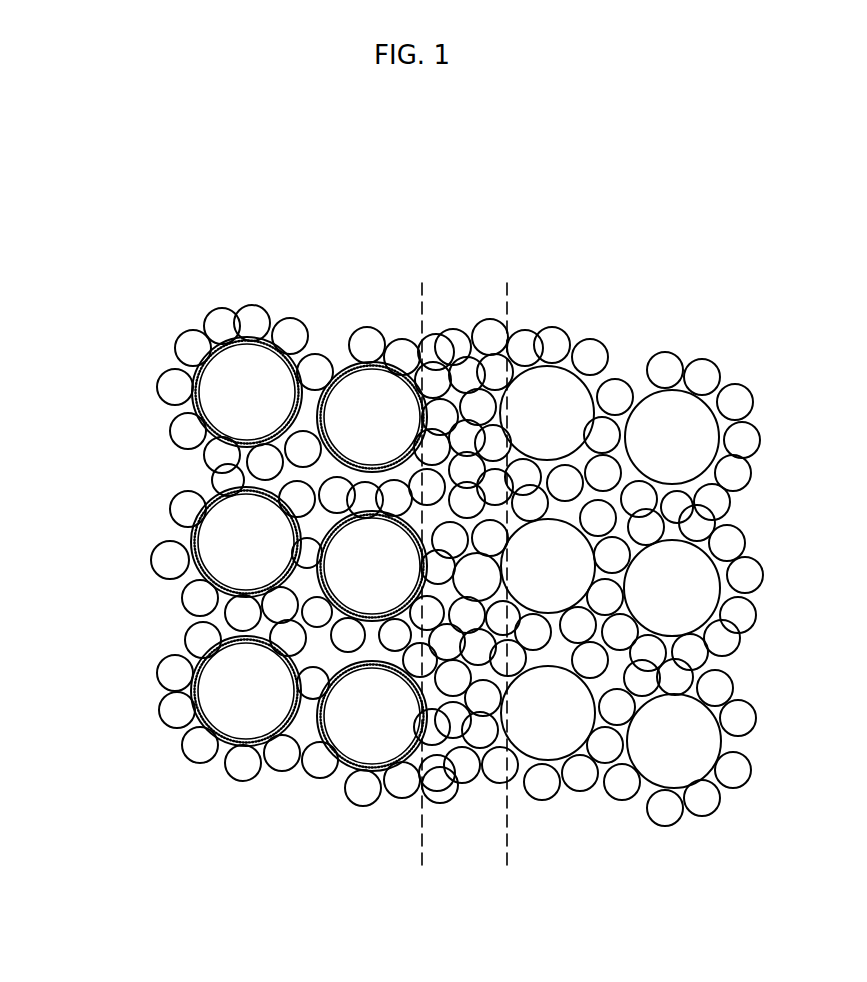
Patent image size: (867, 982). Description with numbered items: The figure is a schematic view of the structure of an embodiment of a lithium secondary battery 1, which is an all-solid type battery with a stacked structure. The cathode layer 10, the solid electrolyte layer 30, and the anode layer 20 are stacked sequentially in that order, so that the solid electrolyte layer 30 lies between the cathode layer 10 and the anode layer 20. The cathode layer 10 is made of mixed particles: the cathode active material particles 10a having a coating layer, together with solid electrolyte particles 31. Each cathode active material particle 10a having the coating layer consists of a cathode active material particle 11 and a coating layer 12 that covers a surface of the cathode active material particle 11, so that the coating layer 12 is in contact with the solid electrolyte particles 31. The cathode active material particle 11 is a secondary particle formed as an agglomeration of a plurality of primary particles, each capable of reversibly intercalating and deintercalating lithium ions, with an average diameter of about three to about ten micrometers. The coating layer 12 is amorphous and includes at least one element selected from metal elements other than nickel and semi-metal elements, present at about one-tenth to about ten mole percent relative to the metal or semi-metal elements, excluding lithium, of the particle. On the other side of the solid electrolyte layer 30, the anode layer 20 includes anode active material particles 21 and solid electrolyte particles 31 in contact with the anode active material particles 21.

The lithium secondary battery 1 is at (718, 307).
The cathode layer 10 is at (165, 880).
The cathode active material particle having the coating layer 10a is at (278, 260).
The cathode active material particle 11 is at (343, 407).
The coating layer 12 is at (326, 386).
The anode layer 20 is at (507, 880).
The anode active material particle 21 is at (650, 787).
The solid electrolyte layer 30 is at (507, 273).
The solid electrolyte particle 31 is at (369, 340).